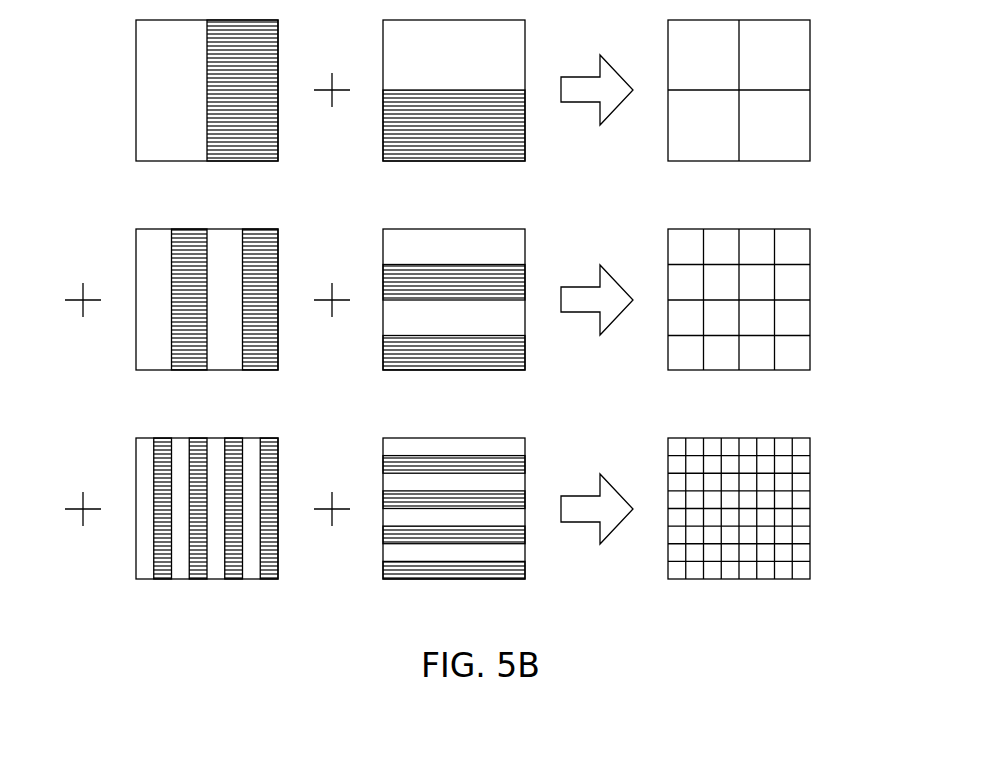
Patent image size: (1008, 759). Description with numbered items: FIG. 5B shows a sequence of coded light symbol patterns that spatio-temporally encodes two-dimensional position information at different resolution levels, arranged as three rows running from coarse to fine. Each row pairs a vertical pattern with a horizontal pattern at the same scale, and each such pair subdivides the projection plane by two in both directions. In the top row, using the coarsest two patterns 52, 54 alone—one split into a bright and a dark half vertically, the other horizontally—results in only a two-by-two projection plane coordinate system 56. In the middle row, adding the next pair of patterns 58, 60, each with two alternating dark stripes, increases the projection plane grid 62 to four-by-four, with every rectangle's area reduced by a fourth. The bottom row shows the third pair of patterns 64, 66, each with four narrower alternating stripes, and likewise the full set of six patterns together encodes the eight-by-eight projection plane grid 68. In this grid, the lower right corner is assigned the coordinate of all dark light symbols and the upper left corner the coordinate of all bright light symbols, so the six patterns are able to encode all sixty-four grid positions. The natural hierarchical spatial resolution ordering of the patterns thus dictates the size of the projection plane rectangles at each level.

The coarsest vertical light pattern 52 is at (136, 48).
The coarsest horizontal light pattern 54 is at (383, 39).
The 2×2 projection plane coordinate system 56 is at (810, 53).
The second-scale vertical light pattern 58 is at (136, 248).
The second-scale horizontal light pattern 60 is at (383, 247).
The 4×4 projection plane grid 62 is at (810, 263).
The finest vertical light pattern 64 is at (136, 458).
The finest horizontal light pattern 66 is at (383, 466).
The 8×8 projection plane grid 68 is at (810, 473).